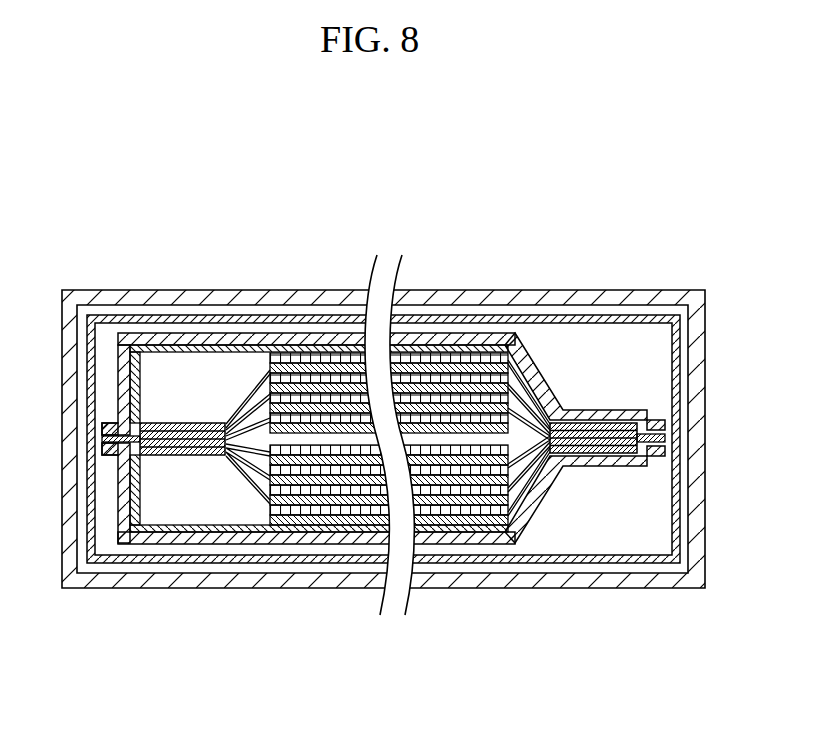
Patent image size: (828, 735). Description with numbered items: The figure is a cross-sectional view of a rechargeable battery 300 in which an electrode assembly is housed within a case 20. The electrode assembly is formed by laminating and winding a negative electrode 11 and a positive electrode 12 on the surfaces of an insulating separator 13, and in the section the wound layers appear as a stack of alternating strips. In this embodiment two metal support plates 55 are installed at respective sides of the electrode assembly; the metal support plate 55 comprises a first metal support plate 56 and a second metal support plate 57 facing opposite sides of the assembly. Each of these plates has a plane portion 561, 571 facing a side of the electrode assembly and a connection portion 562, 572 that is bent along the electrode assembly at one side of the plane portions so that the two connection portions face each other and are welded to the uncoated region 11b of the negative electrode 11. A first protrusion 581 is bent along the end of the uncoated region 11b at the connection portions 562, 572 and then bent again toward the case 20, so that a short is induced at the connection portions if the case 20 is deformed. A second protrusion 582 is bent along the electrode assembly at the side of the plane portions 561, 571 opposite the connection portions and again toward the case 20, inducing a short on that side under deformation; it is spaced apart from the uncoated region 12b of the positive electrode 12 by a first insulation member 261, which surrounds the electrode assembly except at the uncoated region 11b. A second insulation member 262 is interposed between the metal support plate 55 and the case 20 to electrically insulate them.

The rechargeable battery 300 is at (390, 166).
The case 20 is at (535, 298).
The second insulation member 262 is at (105, 562).
The first insulation member 261 is at (218, 529).
The second metal support plate 57 is at (166, 333).
The plane portion 571 is at (208, 337).
The connection portion 572 is at (588, 411).
The first metal support plate 56 is at (322, 547).
The plane portion 561 is at (283, 542).
The connection portion 562 is at (588, 464).
The metal support plate 55 is at (684, 720).
The first protrusion 581 is at (662, 449).
The second protrusion 582 is at (105, 427).
The negative electrode 11 is at (490, 511).
The positive electrode 12 is at (432, 501).
The separator 13 is at (462, 504).
The uncoated region 11b is at (612, 451).
The uncoated region 12b is at (165, 457).